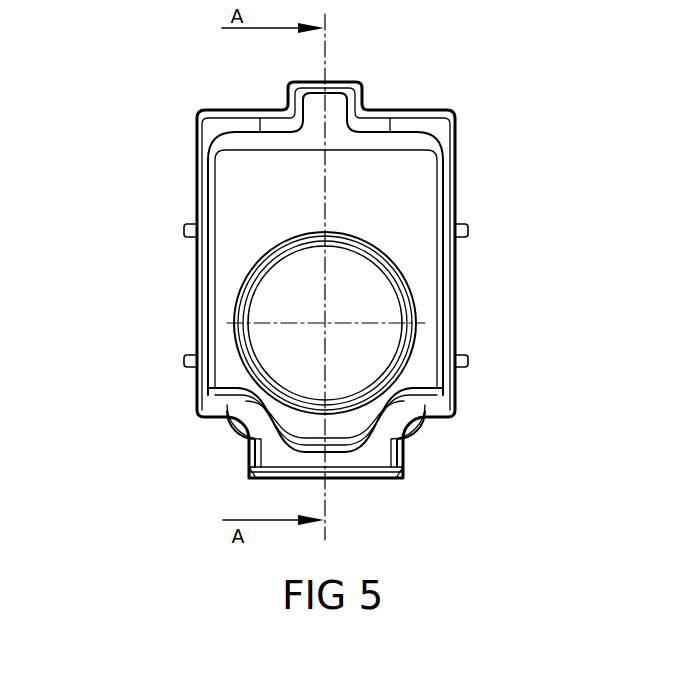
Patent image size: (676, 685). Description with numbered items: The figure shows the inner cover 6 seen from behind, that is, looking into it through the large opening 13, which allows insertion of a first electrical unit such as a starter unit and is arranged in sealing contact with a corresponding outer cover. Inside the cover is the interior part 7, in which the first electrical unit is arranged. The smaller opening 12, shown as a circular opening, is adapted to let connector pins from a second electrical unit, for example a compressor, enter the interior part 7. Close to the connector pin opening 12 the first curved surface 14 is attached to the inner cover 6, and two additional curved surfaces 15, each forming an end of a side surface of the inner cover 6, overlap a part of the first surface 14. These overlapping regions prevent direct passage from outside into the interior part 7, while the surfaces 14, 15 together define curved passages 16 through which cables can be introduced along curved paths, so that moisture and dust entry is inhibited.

The inner cover 6 is at (130, 115).
The interior part 7 is at (253, 200).
The smaller opening 12 is at (370, 330).
The large opening 13 is at (421, 186).
The first curved surface 14 is at (360, 454).
The additional curved surfaces 15 is at (228, 427).
The passages 16 is at (252, 478).